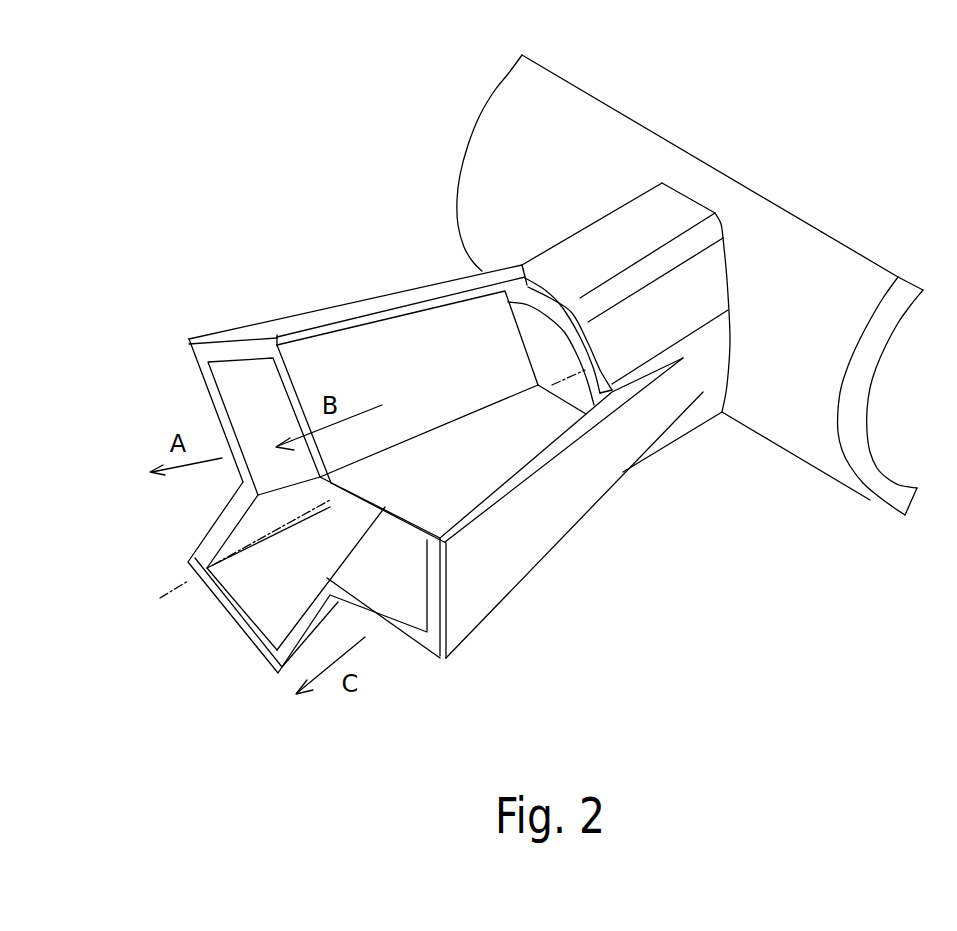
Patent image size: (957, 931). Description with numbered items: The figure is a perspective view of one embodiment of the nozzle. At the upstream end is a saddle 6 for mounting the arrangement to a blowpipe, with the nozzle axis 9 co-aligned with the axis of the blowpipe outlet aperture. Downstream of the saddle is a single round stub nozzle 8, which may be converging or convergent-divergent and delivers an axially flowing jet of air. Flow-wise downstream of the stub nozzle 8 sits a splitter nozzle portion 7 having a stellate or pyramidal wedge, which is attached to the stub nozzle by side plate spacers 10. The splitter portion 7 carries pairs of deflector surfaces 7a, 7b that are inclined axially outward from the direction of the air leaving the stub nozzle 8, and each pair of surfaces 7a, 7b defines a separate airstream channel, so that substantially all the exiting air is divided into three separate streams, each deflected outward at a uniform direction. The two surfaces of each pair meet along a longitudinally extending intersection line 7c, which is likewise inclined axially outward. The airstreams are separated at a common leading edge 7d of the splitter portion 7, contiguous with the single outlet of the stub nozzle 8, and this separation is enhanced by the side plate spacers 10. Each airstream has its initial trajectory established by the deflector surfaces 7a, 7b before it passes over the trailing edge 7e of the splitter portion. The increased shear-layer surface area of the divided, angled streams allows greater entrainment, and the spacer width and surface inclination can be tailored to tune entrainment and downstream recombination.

The saddle 6 is at (602, 137).
The splitter nozzle portion 7 is at (342, 357).
The deflector surface 7a is at (427, 368).
The deflector surface 7b is at (464, 476).
The intersection line 7c is at (483, 405).
The common leading edge 7d is at (523, 338).
The trailing edge 7e is at (404, 520).
The stub nozzle 8 is at (705, 393).
The nozzle axis 9 is at (838, 233).
The side plate spacers 10 is at (543, 527).